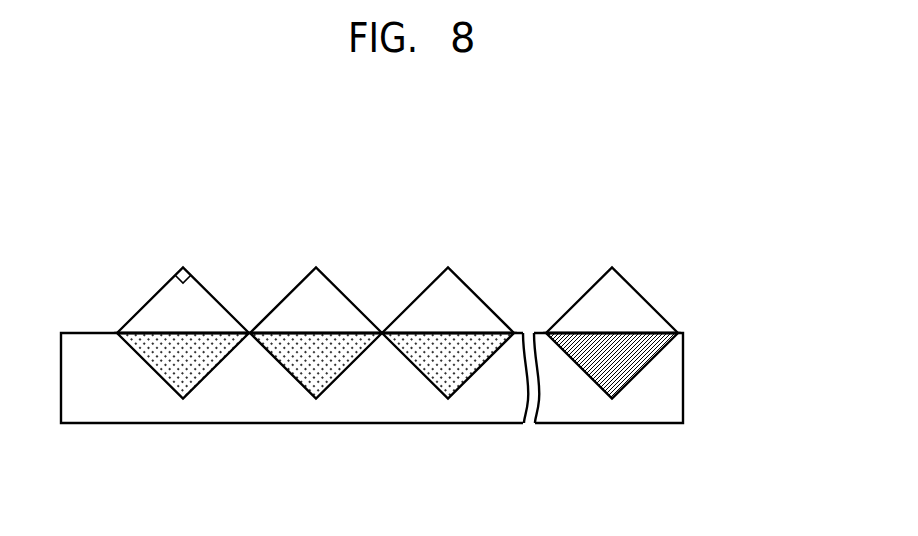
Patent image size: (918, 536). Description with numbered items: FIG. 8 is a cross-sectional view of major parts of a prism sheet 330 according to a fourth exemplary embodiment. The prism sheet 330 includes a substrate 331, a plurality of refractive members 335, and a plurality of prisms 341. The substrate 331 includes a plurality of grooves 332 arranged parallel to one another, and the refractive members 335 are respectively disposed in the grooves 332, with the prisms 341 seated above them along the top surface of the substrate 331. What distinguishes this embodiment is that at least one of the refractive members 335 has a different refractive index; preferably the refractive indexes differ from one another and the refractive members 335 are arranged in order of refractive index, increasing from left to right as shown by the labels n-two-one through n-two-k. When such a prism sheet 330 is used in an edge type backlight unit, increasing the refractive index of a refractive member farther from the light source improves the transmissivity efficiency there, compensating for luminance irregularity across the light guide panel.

The prism sheet 330 is at (656, 253).
The substrate 331 is at (672, 382).
The grooves 332 is at (432, 377).
The refractive members 335 is at (681, 334).
The prisms 341 is at (638, 318).